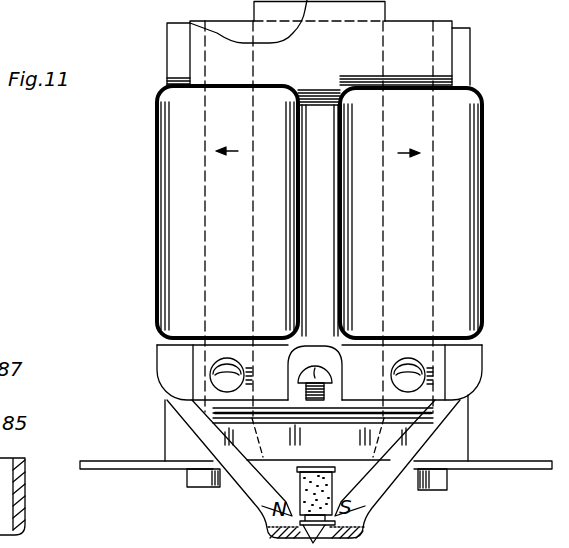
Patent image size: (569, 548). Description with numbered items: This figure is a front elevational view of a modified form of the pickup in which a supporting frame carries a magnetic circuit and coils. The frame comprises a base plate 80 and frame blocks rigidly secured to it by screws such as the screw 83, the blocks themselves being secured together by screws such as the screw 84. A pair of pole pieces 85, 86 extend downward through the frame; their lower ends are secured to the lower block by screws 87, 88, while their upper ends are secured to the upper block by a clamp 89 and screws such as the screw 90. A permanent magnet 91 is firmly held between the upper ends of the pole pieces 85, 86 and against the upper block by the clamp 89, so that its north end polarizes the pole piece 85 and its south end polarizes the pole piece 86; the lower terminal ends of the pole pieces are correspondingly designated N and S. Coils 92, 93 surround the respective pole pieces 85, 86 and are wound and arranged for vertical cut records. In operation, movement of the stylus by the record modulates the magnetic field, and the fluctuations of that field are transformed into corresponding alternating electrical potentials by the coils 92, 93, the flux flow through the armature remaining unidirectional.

The base plate 80 is at (140, 465).
The screw 83 is at (206, 488).
The screw 84 is at (316, 540).
The pole piece 85 is at (227, 30).
The pole piece 86 is at (423, 168).
The screw 87 is at (223, 366).
The screw 88 is at (404, 366).
The clamp 89 is at (440, 66).
The screw 90 is at (182, 80).
The permanent magnet 91 is at (277, 30).
The coil 92 is at (178, 143).
The coil 93 is at (458, 207).